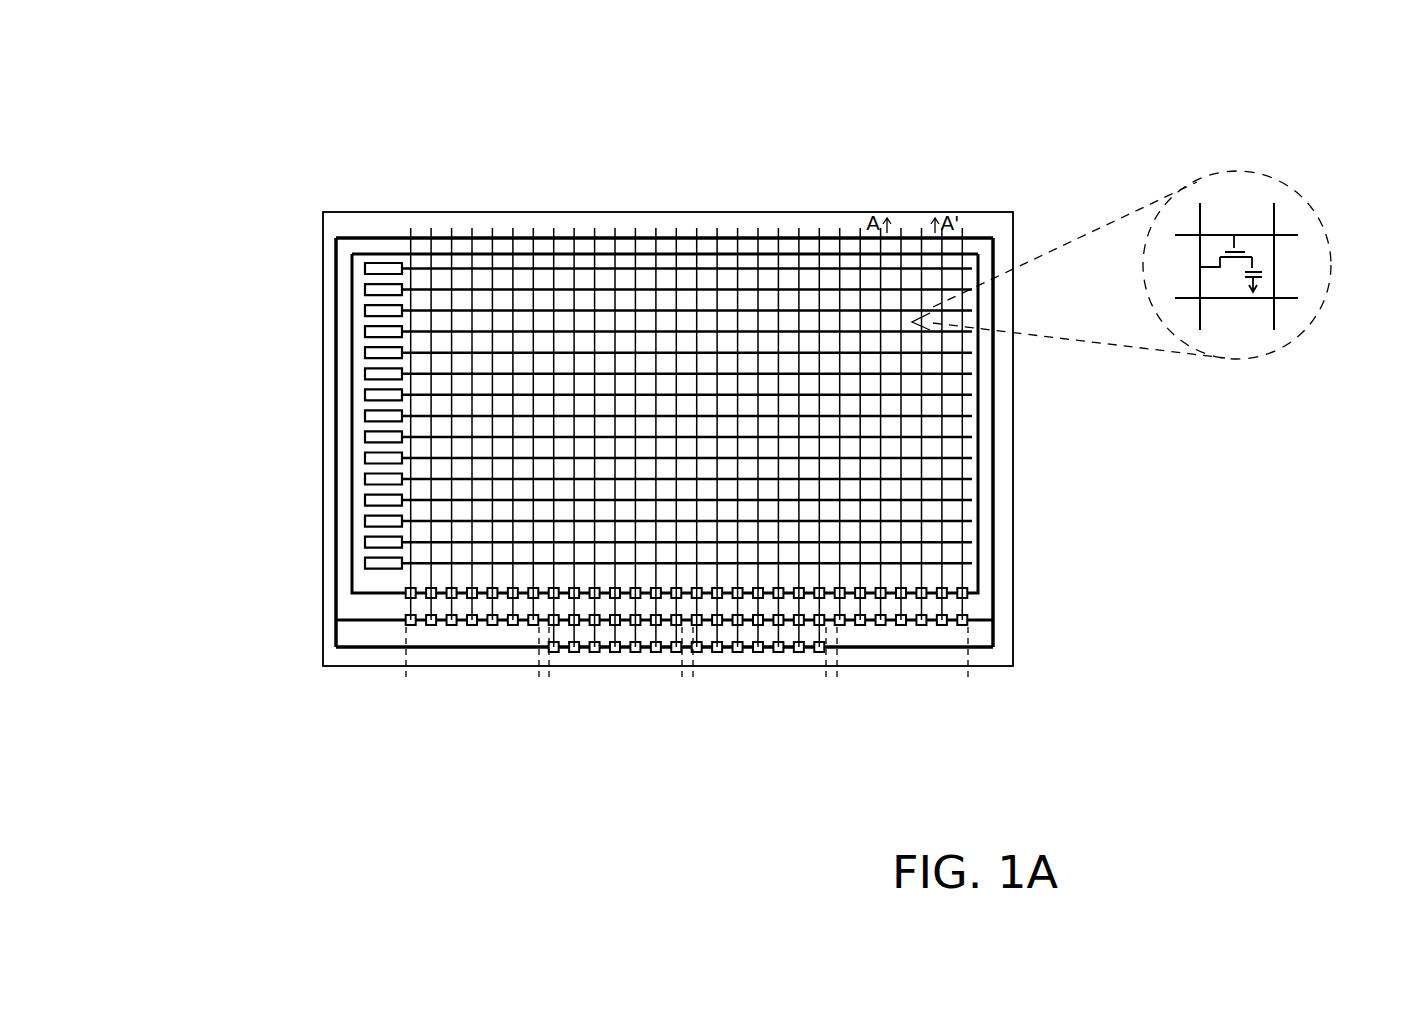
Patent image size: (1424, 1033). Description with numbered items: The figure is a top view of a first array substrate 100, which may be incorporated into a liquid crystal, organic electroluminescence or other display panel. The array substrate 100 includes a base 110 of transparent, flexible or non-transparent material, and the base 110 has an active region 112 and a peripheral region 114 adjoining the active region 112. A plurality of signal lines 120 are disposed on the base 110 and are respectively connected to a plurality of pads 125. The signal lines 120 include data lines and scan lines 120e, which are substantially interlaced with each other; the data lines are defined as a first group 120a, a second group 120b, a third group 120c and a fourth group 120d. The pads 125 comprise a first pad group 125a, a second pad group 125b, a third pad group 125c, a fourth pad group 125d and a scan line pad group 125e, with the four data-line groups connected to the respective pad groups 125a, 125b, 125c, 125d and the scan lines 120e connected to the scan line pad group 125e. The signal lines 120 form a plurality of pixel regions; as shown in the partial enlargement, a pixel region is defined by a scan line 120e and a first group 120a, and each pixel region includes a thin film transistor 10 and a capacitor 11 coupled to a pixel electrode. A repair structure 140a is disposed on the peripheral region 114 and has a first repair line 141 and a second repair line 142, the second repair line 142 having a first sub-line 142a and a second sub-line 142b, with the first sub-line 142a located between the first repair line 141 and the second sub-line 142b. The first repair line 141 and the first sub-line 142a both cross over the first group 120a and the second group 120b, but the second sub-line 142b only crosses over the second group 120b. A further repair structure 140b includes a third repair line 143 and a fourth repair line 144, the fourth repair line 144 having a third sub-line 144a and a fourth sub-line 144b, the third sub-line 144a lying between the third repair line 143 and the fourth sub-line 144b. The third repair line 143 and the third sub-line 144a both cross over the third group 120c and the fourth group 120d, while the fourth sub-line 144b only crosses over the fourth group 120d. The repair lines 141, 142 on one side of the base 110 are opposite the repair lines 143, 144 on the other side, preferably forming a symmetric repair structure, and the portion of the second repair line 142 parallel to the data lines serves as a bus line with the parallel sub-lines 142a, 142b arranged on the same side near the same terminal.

The array substrate 100 is at (279, 87).
The base 110 is at (363, 203).
The active region 112 is at (932, 285).
The peripheral region 114 is at (1002, 212).
The signal lines 120 is at (841, 348).
The first group 120a is at (1056, 374).
The second group 120b is at (826, 212).
The third group 120c is at (537, 212).
The fourth group 120d is at (682, 212).
The scan lines 120e is at (975, 565).
The pads 125 is at (687, 737).
The first pad group 125a is at (902, 682).
The second pad group 125b is at (693, 680).
The third pad group 125c is at (406, 680).
The fourth pad group 125d is at (549, 680).
The scan line pad group 125e is at (360, 572).
The repair structure 140a is at (1098, 563).
The repair structure 140b is at (235, 563).
The first repair line 141 is at (980, 574).
The second repair line 142 is at (996, 607).
The first sub-line 142a is at (980, 622).
The second sub-line 142b is at (982, 648).
The third repair line 143 is at (355, 578).
The fourth repair line 144 is at (335, 610).
The third sub-line 144a is at (347, 624).
The fourth sub-line 144b is at (350, 650).
The thin film transistor 10 is at (1234, 246).
The capacitor 11 is at (1245, 283).